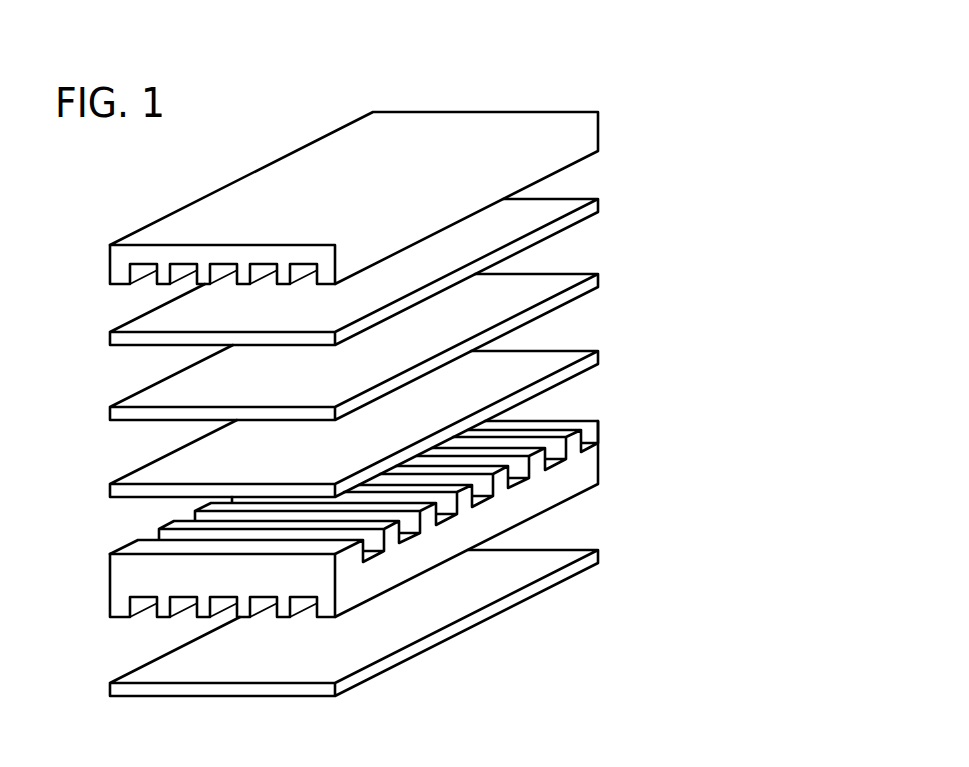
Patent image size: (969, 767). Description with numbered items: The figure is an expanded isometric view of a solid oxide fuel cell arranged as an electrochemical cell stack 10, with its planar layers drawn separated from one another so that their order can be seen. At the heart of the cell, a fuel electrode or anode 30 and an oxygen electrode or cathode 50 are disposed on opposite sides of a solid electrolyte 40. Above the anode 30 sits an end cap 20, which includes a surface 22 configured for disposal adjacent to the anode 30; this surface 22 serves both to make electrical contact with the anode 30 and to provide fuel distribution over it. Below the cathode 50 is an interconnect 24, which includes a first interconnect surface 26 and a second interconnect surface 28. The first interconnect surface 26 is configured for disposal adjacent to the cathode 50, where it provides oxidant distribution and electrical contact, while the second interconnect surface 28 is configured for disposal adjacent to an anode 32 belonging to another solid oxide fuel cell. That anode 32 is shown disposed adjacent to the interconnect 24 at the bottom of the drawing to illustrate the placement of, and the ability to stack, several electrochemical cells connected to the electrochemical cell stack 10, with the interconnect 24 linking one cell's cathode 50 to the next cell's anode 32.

The electrochemical cell stack 10 is at (567, 52).
The end cap 20 is at (379, 220).
The surface 22 is at (161, 287).
The interconnect 24 is at (371, 523).
The first interconnect surface 26 is at (560, 417).
The second interconnect surface 28 is at (162, 620).
The anode 30 is at (601, 200).
The anode 32 is at (601, 552).
The solid electrolyte 40 is at (601, 276).
The cathode 50 is at (601, 353).